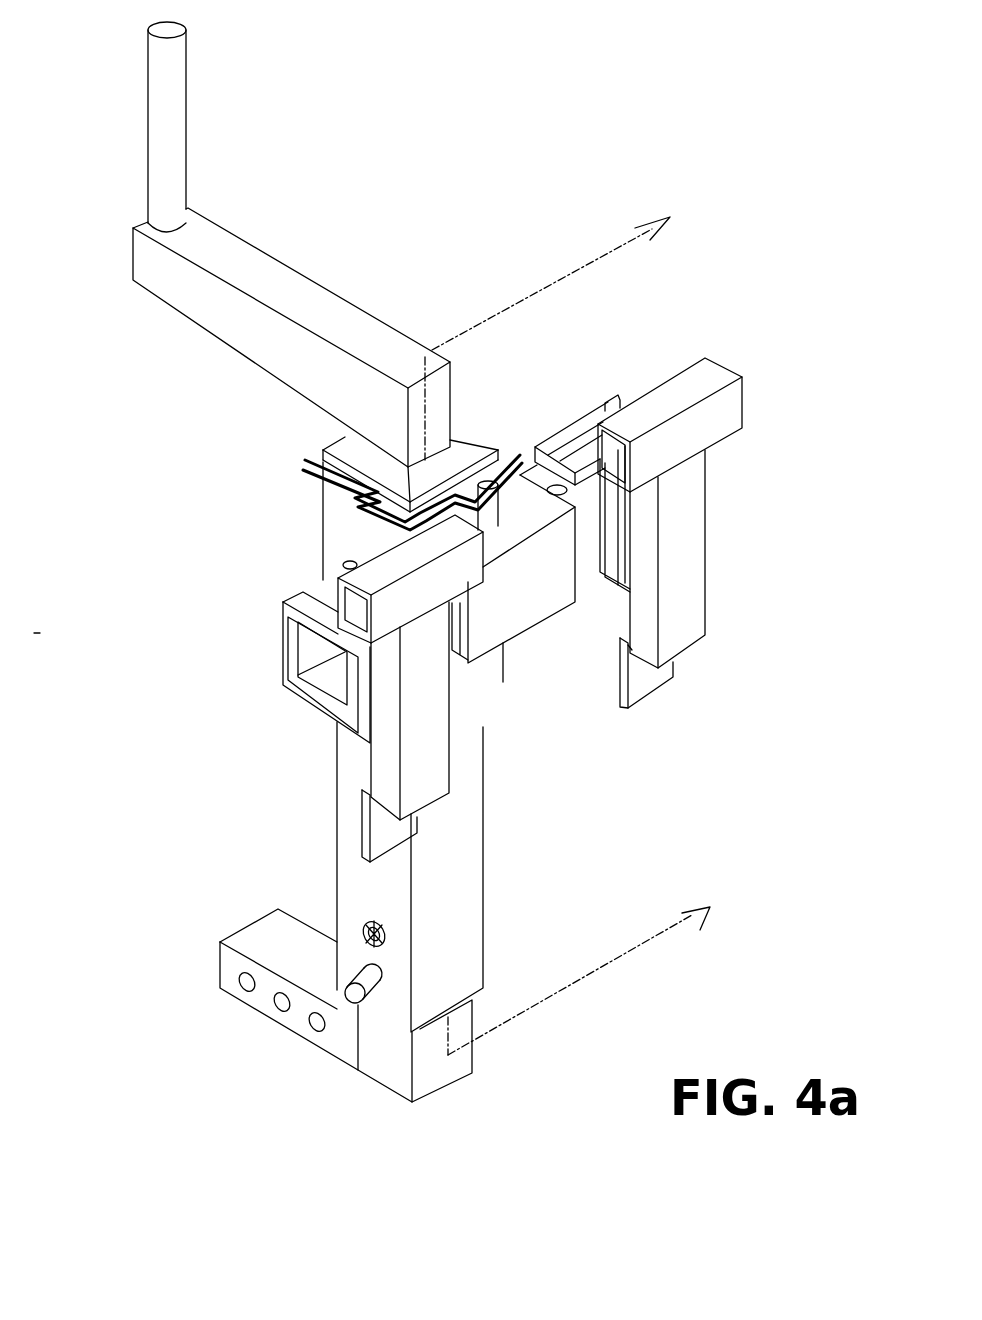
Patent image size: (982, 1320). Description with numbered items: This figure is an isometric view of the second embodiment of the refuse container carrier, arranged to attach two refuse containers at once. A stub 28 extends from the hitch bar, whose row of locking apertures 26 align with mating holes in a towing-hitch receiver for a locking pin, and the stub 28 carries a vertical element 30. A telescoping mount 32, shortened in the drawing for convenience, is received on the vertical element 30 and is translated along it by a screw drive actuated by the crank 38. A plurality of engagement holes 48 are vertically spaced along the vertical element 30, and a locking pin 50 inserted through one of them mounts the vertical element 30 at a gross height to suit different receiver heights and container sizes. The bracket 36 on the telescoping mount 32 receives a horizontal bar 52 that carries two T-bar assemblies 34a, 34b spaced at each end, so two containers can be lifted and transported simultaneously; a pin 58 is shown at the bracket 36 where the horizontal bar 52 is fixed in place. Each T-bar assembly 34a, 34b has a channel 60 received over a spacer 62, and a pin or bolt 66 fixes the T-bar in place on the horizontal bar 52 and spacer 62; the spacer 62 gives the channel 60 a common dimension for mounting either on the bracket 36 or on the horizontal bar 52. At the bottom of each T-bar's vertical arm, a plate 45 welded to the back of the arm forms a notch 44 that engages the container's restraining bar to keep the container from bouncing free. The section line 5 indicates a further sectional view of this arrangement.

The section line 5- 5 is at (595, 618).
The locking apertures 26 is at (280, 1007).
The stub 28 is at (428, 1063).
The vertical element 30 is at (472, 920).
The telescoping mount 32 is at (350, 528).
The T-bar assembly 34a is at (422, 718).
The T-bar assembly 34b is at (687, 532).
The bracket 36 is at (535, 585).
The crank 38 is at (315, 310).
The notch 44 is at (690, 662).
The plate 45 is at (642, 680).
The engagement holes 48 is at (370, 928).
The locking pin 50 is at (357, 1003).
The horizontal bar 52 is at (588, 535).
The pin 58 is at (493, 477).
The channel 60 is at (318, 592).
The spacer 62 is at (282, 615).
The pin or bolt 66 is at (353, 553).